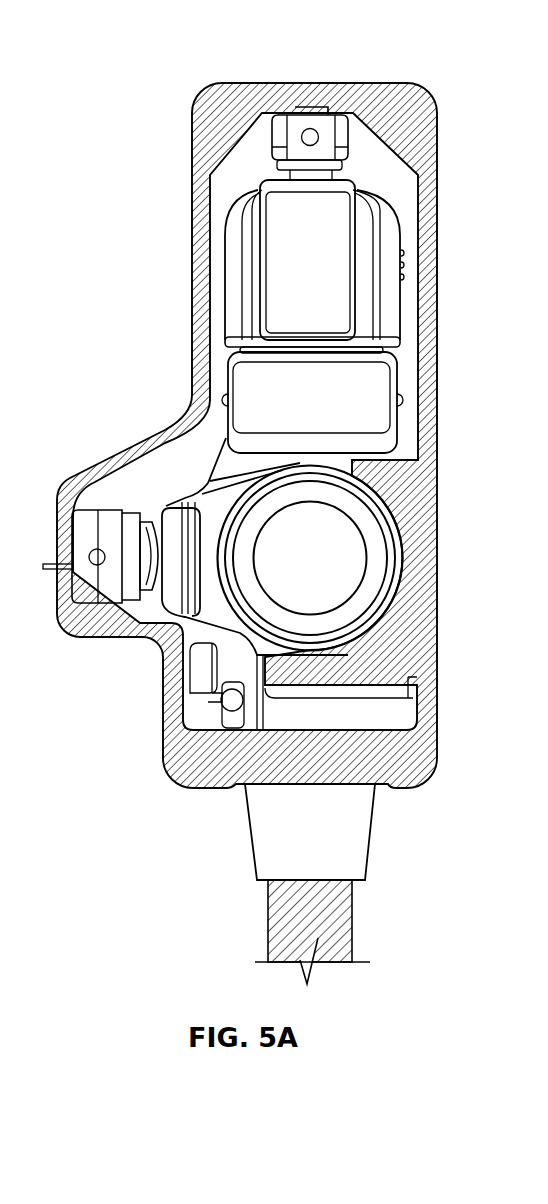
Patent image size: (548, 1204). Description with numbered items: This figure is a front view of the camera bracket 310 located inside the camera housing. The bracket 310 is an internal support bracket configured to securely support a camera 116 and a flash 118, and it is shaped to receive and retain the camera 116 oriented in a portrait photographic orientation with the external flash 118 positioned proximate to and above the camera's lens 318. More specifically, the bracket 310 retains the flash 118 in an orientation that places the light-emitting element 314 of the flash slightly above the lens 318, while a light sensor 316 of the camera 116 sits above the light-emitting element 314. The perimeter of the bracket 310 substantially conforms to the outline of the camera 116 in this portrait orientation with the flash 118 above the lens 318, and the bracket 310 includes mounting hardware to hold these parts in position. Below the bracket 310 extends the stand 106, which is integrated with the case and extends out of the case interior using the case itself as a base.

The camera bracket 310 is at (382, 82).
The light sensor 316 is at (275, 262).
The flash 118 is at (382, 239).
The light-emitting element 314 is at (368, 387).
The lens 318 is at (283, 560).
The camera 116 is at (178, 573).
The stand 106 is at (268, 915).